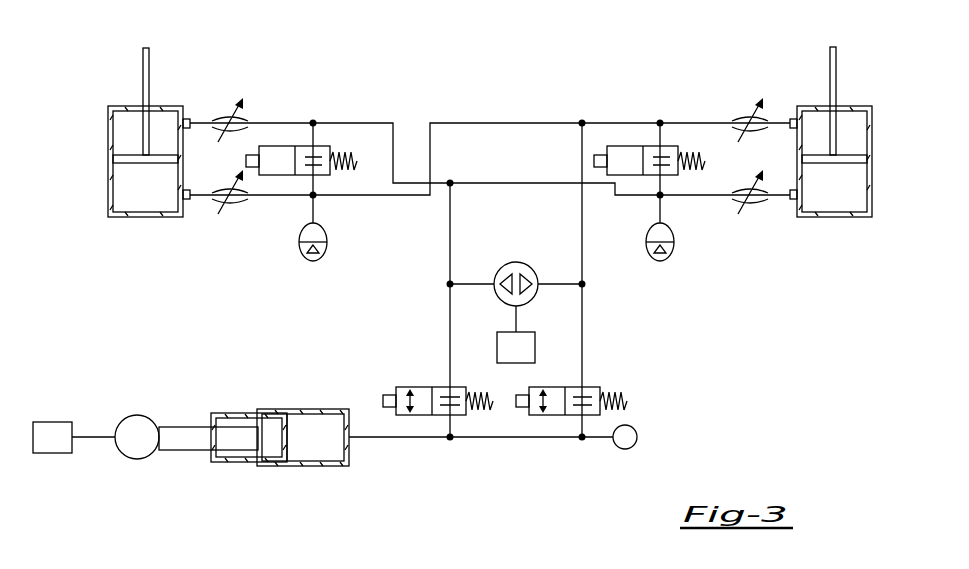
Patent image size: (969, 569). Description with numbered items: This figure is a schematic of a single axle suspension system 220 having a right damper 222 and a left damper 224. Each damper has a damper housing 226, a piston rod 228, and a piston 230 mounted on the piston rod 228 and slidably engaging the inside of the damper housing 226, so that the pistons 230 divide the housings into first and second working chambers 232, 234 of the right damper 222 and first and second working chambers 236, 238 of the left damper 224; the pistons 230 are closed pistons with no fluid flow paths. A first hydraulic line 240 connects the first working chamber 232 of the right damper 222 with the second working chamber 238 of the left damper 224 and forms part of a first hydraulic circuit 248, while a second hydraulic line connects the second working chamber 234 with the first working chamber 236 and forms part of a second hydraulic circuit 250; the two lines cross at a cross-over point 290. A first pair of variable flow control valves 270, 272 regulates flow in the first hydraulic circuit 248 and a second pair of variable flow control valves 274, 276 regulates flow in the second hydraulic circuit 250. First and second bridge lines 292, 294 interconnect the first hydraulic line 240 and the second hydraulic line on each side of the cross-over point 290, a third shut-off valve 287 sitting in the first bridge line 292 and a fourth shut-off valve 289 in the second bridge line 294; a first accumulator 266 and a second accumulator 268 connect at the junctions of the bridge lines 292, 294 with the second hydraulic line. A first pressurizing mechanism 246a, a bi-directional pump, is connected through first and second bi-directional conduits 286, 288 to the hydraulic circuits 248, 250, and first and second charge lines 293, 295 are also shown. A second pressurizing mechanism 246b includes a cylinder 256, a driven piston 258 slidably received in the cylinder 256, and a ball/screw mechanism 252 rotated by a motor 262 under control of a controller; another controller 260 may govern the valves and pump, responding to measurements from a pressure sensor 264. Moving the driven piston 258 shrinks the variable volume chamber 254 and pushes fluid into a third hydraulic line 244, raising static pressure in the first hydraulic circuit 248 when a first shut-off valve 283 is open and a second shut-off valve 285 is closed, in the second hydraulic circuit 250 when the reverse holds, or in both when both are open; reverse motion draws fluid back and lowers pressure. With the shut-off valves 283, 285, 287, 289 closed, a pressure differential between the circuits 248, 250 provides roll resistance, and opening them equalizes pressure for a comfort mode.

The single axle suspension system 220 is at (138, 484).
The right damper 222 is at (882, 95).
The left damper 224 is at (100, 90).
The damper housing 226 is at (108, 184).
The piston rod 228 is at (143, 53).
The piston 230 is at (128, 157).
The first working chamber of right damper 232 is at (815, 125).
The second working chamber of right damper 234 is at (850, 198).
The first working chamber of left damper 236 is at (170, 125).
The second working chamber of left damper 238 is at (150, 198).
The first hydraulic line 240 is at (618, 122).
The third hydraulic line 244 is at (412, 437).
The first pressurizing mechanism 246a is at (518, 262).
The second pressurizing mechanism 246b is at (302, 482).
The first hydraulic circuit 248 is at (594, 112).
The second hydraulic circuit 250 is at (530, 165).
The ball/screw mechanism 252 is at (178, 440).
The variable volume chamber 254 is at (313, 448).
The cylinder 256 is at (349, 455).
The driven piston 258 is at (230, 462).
The controller 260 is at (497, 346).
The motor 262 is at (137, 415).
The pressure sensor 264 is at (637, 437).
The first accumulator 266 is at (306, 256).
The second accumulator 268 is at (668, 255).
The first variable flow control valve 270 is at (748, 117).
The second variable flow control valve 272 is at (233, 200).
The third variable flow control valve 274 is at (762, 200).
The fourth variable flow control valve 276 is at (226, 117).
The first shut-off valve 283 is at (596, 387).
The second shut-off valve 285 is at (404, 387).
The first bi-directional conduit 286 is at (570, 284).
The third shut-off valve 287 is at (688, 150).
The second bi-directional conduit 288 is at (462, 284).
The fourth shut-off valve 289 is at (338, 150).
The cross-over point 290 is at (418, 170).
The first bridge line 292 is at (658, 125).
The first charge line 293 is at (582, 205).
The second bridge line 294 is at (313, 128).
The second charge line 295 is at (450, 222).